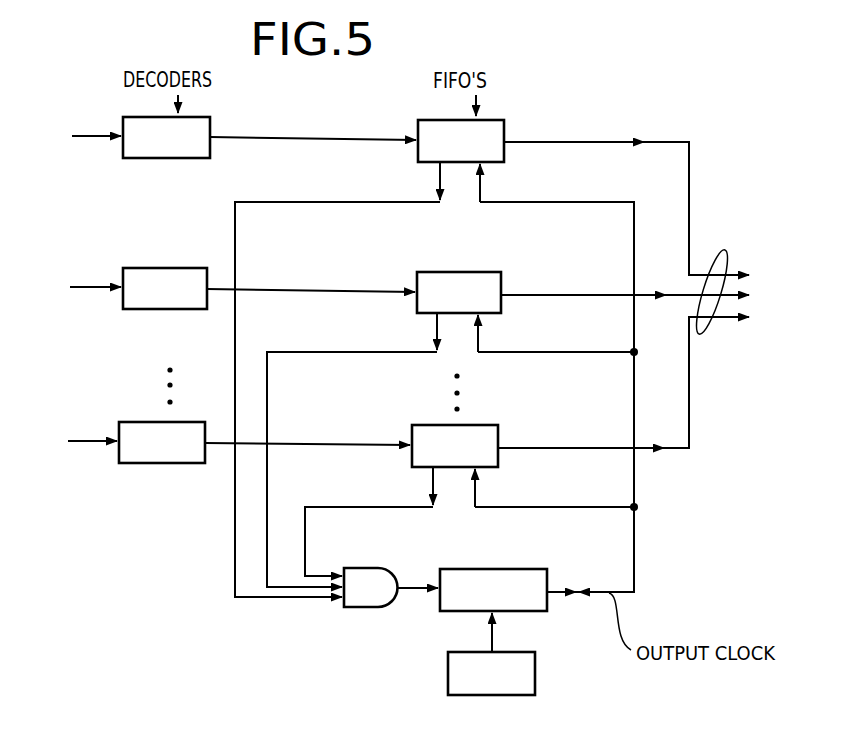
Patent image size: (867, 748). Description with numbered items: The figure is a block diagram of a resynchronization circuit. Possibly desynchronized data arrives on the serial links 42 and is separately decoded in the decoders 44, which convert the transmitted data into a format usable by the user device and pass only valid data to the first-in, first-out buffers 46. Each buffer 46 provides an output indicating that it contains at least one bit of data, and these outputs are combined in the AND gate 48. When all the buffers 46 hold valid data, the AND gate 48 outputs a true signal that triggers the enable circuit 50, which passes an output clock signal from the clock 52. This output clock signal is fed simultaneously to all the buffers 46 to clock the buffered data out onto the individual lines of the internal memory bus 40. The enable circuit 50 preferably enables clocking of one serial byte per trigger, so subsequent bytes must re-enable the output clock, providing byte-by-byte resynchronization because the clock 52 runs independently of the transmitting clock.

The internal memory bus 40 is at (726, 249).
The serial links 42 is at (93, 132).
The decoders 44 is at (194, 152).
The first-in, first-out buffers 46 is at (500, 136).
The AND gate 48 is at (372, 568).
The enable circuit 50 is at (500, 569).
The clock 52 is at (536, 677).